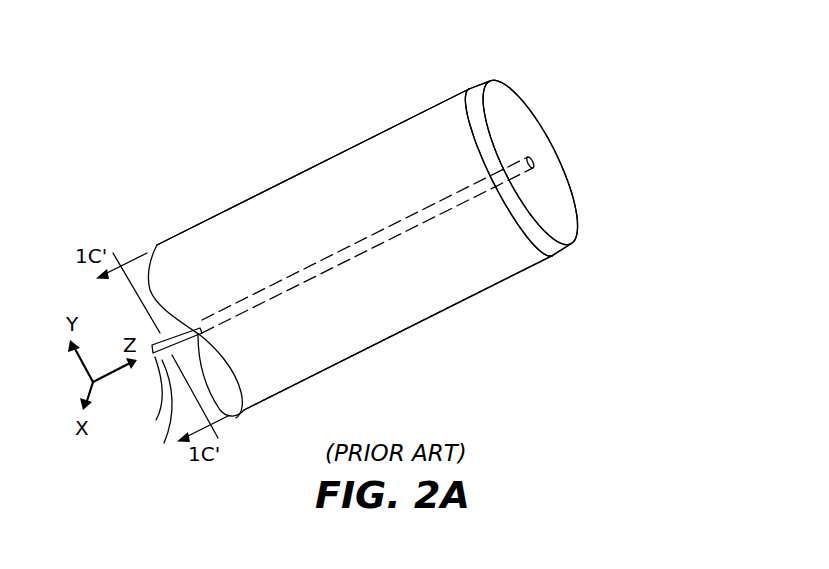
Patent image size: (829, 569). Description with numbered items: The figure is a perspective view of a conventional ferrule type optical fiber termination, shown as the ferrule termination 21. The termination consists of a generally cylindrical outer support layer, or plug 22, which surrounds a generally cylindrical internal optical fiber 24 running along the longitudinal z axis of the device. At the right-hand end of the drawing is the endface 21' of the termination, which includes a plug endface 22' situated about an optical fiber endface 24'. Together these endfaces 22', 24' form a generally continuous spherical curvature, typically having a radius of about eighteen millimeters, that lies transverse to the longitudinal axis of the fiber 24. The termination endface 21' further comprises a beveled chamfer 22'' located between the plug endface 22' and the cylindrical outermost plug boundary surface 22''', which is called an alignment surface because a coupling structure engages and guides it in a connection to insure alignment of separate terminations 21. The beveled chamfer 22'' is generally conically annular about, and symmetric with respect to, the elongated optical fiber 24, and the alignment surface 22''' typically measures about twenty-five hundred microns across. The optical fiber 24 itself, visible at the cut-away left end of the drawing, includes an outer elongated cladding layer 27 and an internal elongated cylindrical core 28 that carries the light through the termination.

The ferrule termination 21 is at (350, 220).
The endface of the termination 21' is at (560, 139).
The outer support layer, or plug 22 is at (398, 281).
The plug endface 22' is at (537, 162).
The beveled chamfer 22'' is at (518, 144).
The alignment surface 22''' is at (313, 167).
The optical fiber 24 is at (367, 245).
The optical fiber endface 24' is at (569, 162).
The cladding layer 27 is at (155, 414).
The core 28 is at (144, 400).